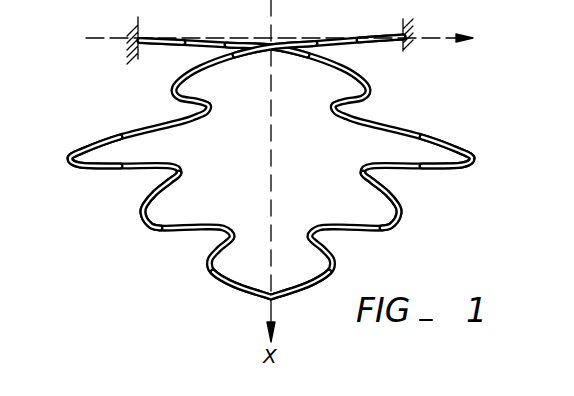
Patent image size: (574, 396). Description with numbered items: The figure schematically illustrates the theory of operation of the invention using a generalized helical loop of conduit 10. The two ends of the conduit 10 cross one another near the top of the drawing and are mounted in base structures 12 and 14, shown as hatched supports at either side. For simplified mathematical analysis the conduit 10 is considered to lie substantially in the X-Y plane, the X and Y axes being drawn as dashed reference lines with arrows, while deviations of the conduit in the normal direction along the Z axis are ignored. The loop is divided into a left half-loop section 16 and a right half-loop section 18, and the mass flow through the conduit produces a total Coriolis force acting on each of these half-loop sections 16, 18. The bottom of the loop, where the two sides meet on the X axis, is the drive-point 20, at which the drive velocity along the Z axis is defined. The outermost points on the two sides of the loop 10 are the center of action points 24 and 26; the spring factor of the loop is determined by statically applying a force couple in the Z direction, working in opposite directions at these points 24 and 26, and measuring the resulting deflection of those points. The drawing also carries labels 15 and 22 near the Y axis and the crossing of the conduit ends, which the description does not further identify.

The helical loop of conduit 10 is at (88, 132).
The base structure 12 is at (140, 33).
The base structure 14 is at (403, 22).
The Y axis reference line 15 is at (256, 20).
The left half-loop section 16 is at (141, 207).
The right half-loop section 18 is at (402, 207).
The drive-point 20 is at (271, 298).
The crossing point of strip 22 is at (270, 40).
The center of action point 24 is at (70, 157).
The center of action point 26 is at (476, 157).